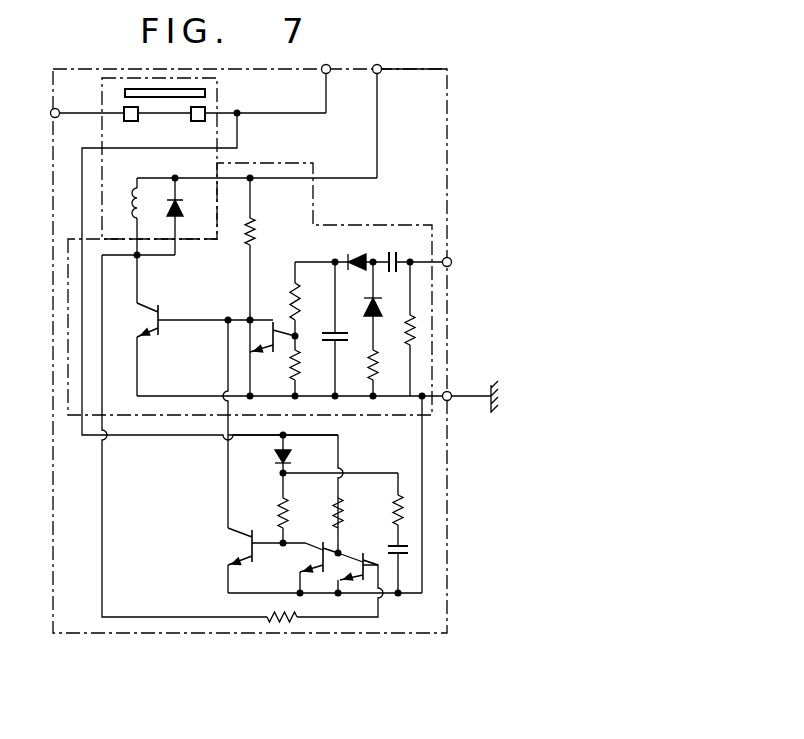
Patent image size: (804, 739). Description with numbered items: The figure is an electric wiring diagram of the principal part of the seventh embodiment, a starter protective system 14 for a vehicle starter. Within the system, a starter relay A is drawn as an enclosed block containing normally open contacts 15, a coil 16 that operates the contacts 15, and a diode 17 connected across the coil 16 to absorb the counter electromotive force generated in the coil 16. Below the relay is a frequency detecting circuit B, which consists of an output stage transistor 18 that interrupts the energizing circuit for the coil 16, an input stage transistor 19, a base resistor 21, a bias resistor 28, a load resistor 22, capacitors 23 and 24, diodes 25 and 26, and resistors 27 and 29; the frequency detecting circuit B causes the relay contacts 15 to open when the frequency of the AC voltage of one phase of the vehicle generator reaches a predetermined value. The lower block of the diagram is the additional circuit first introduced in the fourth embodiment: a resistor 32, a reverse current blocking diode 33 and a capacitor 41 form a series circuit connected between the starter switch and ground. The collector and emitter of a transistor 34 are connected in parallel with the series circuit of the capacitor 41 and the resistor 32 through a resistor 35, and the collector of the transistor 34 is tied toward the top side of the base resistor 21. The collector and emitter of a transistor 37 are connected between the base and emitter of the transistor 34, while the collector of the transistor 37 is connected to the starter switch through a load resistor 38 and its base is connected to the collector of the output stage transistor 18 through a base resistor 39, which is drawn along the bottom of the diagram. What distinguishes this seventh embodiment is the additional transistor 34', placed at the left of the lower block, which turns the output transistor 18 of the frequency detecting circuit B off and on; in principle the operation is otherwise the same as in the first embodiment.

The starter protective system 14 is at (401, 70).
The normally open contacts 15 is at (205, 97).
The coil 16 is at (128, 213).
The diode 17 is at (182, 213).
The output stage transistor 18 is at (143, 316).
The input stage transistor 19 is at (253, 333).
The base resistor 21 is at (290, 302).
The load resistor 22 is at (257, 231).
The capacitor 23 is at (332, 330).
The capacitor 24 is at (395, 260).
The diode 25 is at (355, 257).
The diode 26 is at (368, 306).
The resistor 27 is at (375, 366).
The bias resistor 28 is at (292, 361).
The resistor 29 is at (415, 332).
The resistor 32 is at (393, 508).
The reverse current blocking diode 33 is at (275, 458).
The transistor 34 is at (298, 569).
The additional transistor 34' is at (210, 546).
The resistor 35 is at (275, 505).
The transistor 37 is at (350, 562).
The load resistor 38 is at (330, 517).
The base resistor 39 is at (283, 622).
The capacitor 41 is at (413, 549).
The starter relay A is at (100, 96).
The frequency detecting circuit B is at (68, 302).